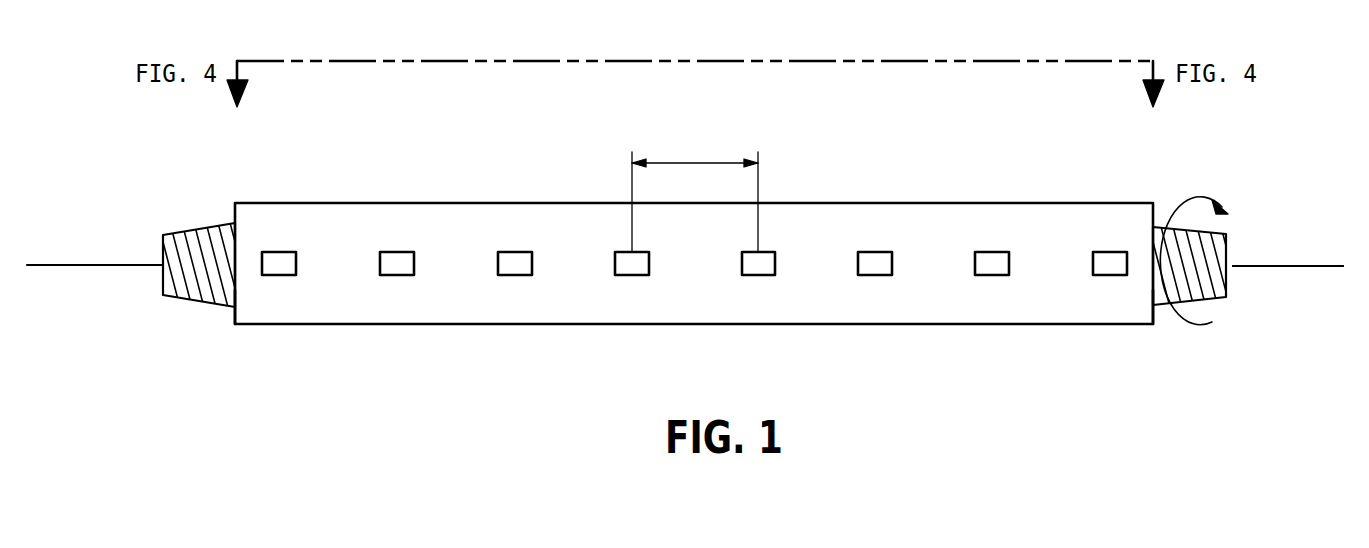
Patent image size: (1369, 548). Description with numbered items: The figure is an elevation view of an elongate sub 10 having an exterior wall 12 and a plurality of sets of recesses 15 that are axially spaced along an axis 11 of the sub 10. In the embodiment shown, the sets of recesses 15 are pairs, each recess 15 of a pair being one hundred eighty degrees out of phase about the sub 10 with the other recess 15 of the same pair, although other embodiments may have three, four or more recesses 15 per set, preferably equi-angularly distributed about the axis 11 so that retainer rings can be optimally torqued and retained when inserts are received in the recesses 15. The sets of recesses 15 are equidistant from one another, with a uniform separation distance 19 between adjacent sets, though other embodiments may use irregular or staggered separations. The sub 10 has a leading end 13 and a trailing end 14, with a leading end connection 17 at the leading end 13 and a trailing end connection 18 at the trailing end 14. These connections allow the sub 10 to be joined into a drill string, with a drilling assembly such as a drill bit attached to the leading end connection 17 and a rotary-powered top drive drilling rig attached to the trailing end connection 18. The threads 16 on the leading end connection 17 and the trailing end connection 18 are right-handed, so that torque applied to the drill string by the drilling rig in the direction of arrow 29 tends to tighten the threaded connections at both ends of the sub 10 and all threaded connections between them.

The sub 10 is at (685, 238).
The axis 11 is at (1280, 266).
The exterior wall 12 is at (488, 305).
The leading end 13 is at (236, 323).
The trailing end 14 is at (1153, 325).
The recesses 15 is at (632, 276).
The threads 16 is at (168, 285).
The leading end connection 17 is at (168, 232).
The trailing end connection 18 is at (1217, 232).
The separation distance 19 is at (698, 163).
The arrow 29 is at (1213, 322).